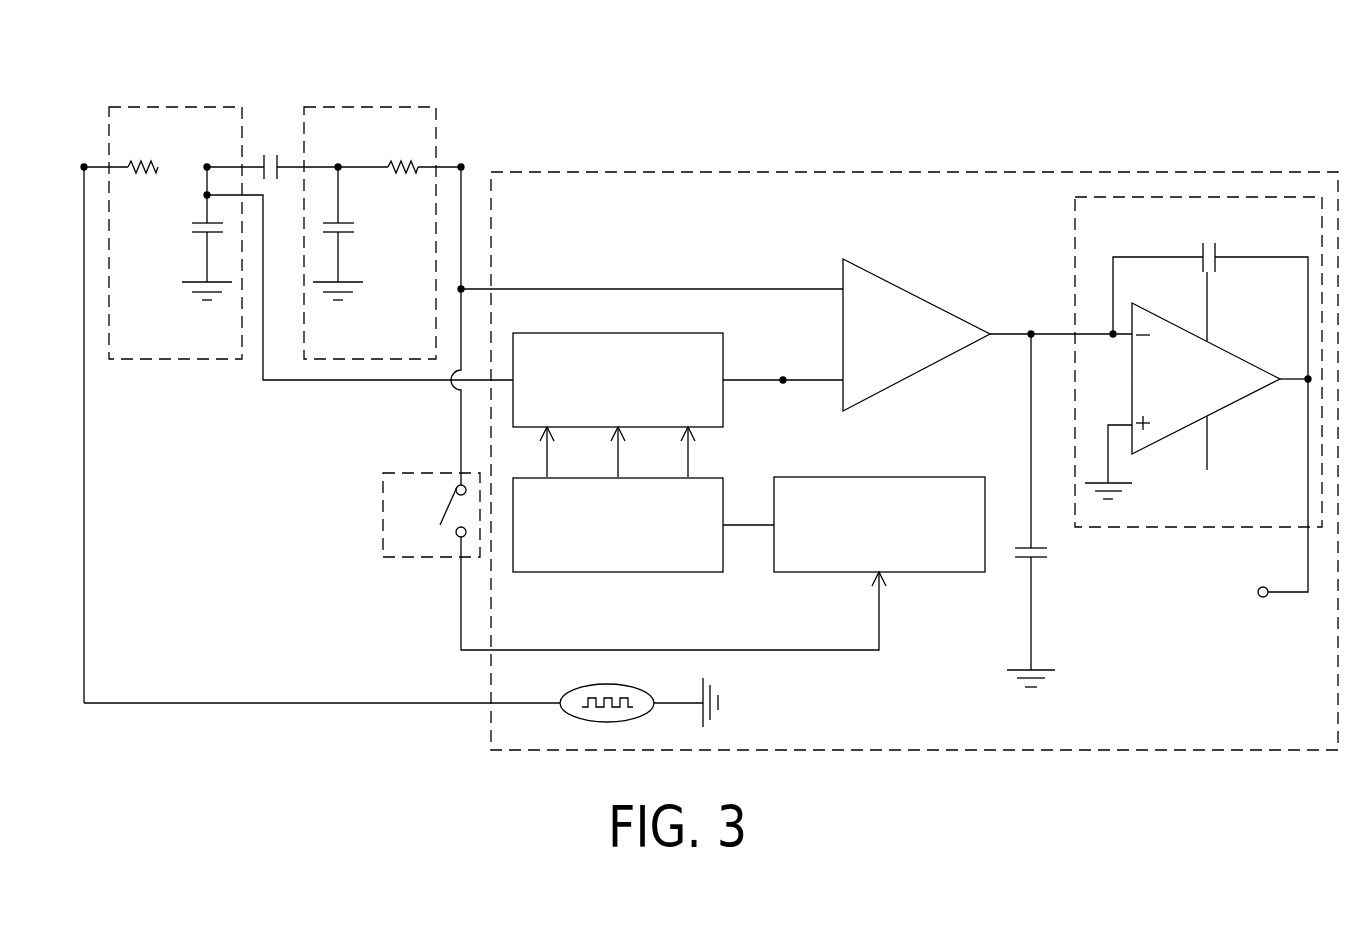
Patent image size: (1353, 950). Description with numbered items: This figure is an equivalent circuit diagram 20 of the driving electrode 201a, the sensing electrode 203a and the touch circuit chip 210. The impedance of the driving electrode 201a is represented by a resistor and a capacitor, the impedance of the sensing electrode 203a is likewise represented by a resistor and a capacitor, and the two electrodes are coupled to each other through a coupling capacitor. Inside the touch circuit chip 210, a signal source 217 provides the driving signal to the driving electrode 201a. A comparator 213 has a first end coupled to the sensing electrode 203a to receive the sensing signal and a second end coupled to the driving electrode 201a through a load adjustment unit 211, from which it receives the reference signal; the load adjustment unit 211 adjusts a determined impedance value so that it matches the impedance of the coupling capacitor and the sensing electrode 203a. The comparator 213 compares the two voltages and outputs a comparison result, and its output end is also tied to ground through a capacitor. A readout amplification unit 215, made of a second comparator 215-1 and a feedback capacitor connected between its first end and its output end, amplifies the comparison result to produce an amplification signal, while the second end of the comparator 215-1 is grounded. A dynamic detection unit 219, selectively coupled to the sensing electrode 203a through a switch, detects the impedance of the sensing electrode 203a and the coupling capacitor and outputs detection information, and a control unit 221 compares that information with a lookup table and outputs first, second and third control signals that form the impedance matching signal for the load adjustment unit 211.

The touch sensing circuit 20 is at (106, 77).
The driving electrode 201a is at (177, 107).
The sensing electrode 203a is at (372, 107).
The touch circuit chip 210 is at (916, 172).
The load adjustment unit 211 is at (658, 333).
The comparator 213 is at (922, 295).
The readout amplification unit 215 is at (1198, 197).
The comparator 215-1 is at (1238, 405).
The signal source 217 is at (607, 722).
The dynamic detection unit 219 is at (952, 572).
The control unit 221 is at (618, 572).